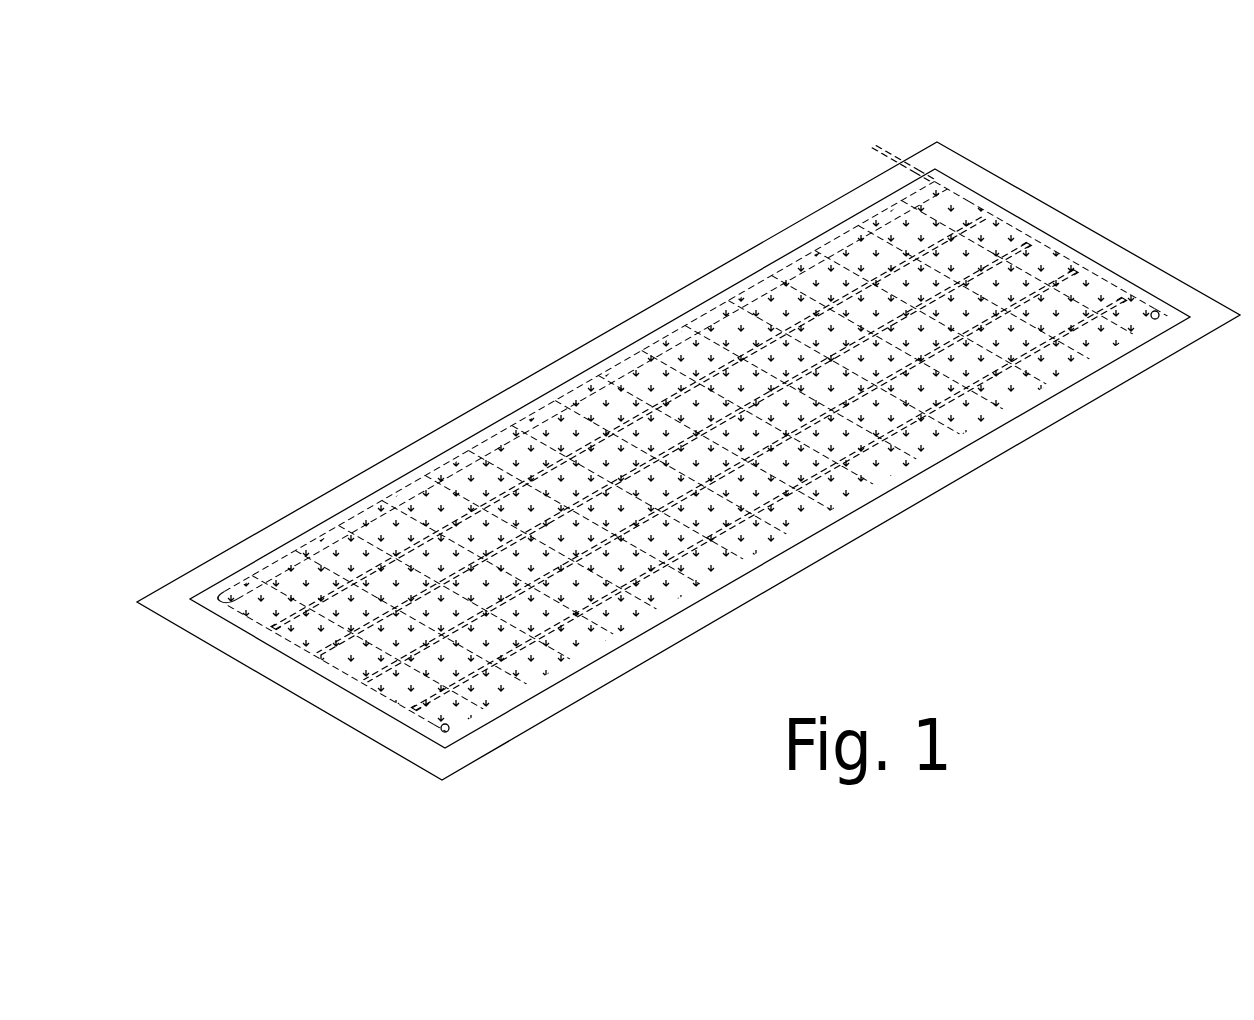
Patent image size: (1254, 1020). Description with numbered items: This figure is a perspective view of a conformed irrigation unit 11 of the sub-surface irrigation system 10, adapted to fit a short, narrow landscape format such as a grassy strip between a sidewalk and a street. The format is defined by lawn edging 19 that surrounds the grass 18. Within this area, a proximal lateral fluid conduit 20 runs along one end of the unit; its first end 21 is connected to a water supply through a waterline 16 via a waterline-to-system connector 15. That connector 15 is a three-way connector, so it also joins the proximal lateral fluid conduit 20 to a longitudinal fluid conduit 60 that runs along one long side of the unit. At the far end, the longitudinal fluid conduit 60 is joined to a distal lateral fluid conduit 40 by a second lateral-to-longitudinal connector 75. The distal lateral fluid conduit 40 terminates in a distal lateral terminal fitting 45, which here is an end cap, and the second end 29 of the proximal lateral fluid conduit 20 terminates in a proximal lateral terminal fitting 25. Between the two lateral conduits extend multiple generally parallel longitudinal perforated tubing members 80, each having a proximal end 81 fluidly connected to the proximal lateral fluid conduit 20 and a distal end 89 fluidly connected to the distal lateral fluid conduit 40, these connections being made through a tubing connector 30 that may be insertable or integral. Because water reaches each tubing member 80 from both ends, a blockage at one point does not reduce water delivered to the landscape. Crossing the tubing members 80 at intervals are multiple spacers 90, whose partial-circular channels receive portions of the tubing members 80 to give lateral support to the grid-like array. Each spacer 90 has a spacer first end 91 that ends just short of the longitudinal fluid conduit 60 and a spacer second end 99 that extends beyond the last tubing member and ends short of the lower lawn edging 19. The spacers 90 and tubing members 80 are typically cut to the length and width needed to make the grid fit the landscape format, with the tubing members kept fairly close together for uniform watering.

The irrigation system 10 is at (497, 293).
The conformed irrigation unit 11 is at (677, 282).
The waterline-to-system connector 15 is at (943, 187).
The waterline 16 is at (869, 151).
The grass 18 is at (516, 672).
The lawn edging 19 is at (246, 651).
The proximal lateral fluid conduit 20 is at (1103, 283).
The first end 21 is at (953, 195).
The proximal lateral terminal fitting 25 is at (1163, 318).
The second end 29 is at (1152, 310).
The tubing connector 30 is at (1031, 243).
The distal lateral fluid conduit 40 is at (338, 668).
The distal lateral terminal fitting 45 is at (448, 729).
The longitudinal fluid conduit 60 is at (516, 434).
The second lateral-to-longitudinal connector 75 is at (228, 596).
The longitudinal perforated tubing members 80 is at (800, 498).
The proximal end 81 is at (1080, 275).
The distal end 89 is at (442, 722).
The spacers 90 is at (658, 602).
The spacer first end 91 is at (377, 540).
The spacer second end 99 is at (946, 417).